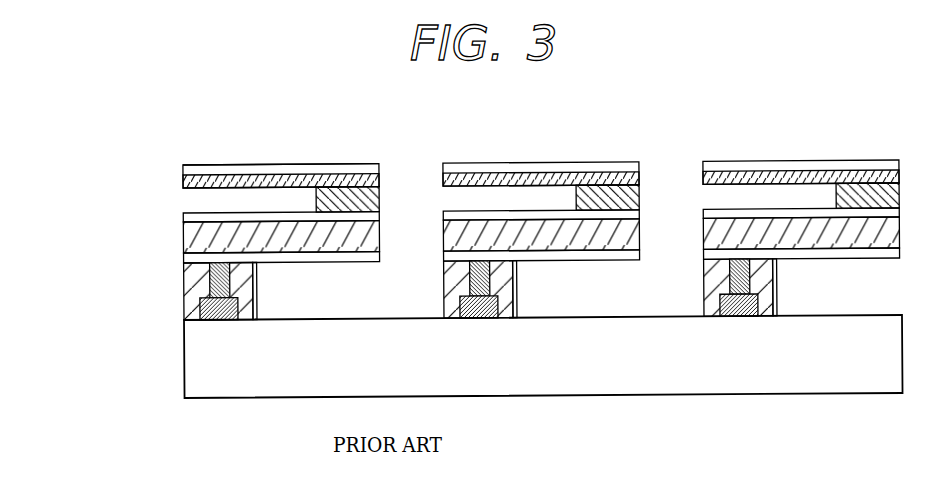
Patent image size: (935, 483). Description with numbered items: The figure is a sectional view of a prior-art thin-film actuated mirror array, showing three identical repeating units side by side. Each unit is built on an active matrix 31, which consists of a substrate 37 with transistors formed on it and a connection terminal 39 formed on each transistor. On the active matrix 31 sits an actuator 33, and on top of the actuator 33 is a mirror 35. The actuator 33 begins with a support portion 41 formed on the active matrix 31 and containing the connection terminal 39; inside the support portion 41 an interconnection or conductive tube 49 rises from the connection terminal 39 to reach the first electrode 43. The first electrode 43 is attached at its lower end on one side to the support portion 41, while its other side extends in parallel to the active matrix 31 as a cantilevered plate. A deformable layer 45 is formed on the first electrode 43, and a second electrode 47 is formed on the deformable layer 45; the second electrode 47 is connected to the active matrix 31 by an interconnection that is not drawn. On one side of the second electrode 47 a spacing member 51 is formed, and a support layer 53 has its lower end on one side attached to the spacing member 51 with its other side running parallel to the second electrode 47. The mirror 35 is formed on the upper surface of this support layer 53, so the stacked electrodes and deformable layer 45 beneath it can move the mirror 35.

The active matrix 31 is at (137, 325).
The actuator 33 is at (112, 312).
The mirror 35 is at (255, 167).
The substrate 37 is at (200, 376).
The connection terminal 39 is at (215, 321).
The support portion 41 is at (192, 295).
The first electrode 43 is at (184, 257).
The deformable layer 45 is at (184, 235).
The second electrode 47 is at (184, 218).
The conductive tube 49 is at (230, 283).
The spacing member 51 is at (323, 203).
The support layer 53 is at (184, 182).